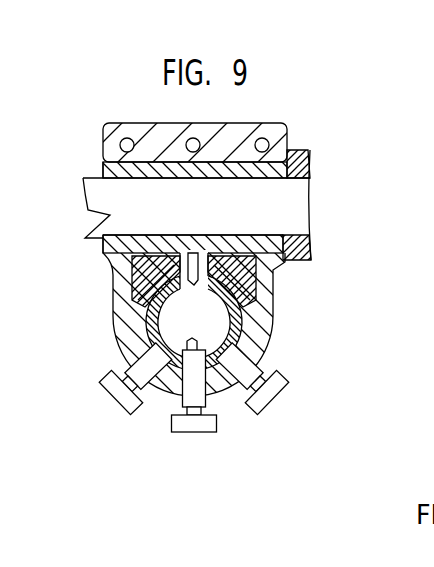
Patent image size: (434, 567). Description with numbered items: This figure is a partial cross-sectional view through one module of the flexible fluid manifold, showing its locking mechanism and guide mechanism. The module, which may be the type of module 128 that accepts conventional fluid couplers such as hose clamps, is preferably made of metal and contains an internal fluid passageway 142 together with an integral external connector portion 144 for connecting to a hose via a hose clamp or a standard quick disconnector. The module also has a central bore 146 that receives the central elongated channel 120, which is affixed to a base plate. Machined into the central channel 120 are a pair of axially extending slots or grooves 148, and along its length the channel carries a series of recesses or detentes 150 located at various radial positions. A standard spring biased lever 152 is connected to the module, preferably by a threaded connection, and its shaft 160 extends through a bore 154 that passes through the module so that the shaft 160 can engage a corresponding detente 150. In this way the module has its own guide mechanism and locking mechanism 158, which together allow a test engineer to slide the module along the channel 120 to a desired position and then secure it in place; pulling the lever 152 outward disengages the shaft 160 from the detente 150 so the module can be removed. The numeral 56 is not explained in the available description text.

The clamp assembly 56 is at (88, 390).
The central elongated channel 120 is at (243, 320).
The module 128 is at (257, 278).
The internal fluid passageway 142 is at (108, 214).
The integral external connector portion 144 is at (310, 150).
The central bore 146 is at (150, 306).
The axially extending slots or grooves 148 is at (193, 278).
The recesses or detentes 150 is at (305, 228).
The spring biased lever 152 is at (118, 395).
The bore 154 is at (175, 363).
The locking mechanism 158 is at (220, 407).
The shaft 160 is at (195, 380).